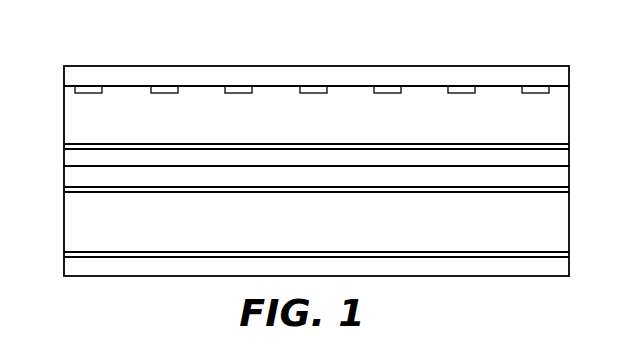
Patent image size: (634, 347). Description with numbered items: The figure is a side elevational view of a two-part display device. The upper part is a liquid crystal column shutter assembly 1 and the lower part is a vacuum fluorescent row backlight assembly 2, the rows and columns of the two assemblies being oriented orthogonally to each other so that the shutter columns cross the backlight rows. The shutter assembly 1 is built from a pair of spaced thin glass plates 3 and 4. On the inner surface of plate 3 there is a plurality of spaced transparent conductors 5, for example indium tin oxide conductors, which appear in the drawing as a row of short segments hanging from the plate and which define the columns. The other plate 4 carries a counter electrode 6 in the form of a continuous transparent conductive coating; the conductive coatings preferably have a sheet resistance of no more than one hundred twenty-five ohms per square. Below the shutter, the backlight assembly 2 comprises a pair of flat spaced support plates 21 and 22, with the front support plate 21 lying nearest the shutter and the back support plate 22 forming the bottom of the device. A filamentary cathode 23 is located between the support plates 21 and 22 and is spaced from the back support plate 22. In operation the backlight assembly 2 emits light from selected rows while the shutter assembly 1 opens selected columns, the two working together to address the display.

The liquid crystal column shutter assembly 1 is at (575, 66).
The vacuum fluorescent row backlight assembly 2 is at (62, 166).
The thin glass plate 3 is at (67, 77).
The thin glass plate 4 is at (67, 157).
The transparent conductors 5 is at (163, 88).
The counter electrode 6 is at (65, 147).
The front support plate 21 is at (572, 173).
The back support plate 22 is at (563, 265).
The filamentary cathode 23 is at (567, 250).